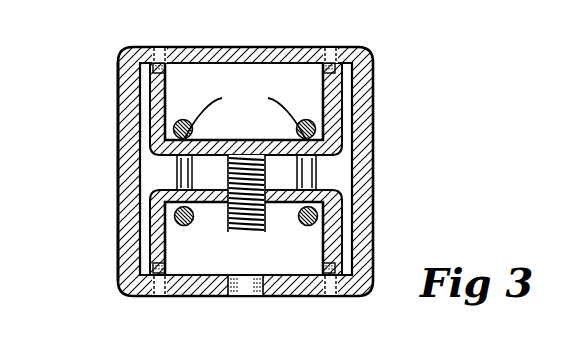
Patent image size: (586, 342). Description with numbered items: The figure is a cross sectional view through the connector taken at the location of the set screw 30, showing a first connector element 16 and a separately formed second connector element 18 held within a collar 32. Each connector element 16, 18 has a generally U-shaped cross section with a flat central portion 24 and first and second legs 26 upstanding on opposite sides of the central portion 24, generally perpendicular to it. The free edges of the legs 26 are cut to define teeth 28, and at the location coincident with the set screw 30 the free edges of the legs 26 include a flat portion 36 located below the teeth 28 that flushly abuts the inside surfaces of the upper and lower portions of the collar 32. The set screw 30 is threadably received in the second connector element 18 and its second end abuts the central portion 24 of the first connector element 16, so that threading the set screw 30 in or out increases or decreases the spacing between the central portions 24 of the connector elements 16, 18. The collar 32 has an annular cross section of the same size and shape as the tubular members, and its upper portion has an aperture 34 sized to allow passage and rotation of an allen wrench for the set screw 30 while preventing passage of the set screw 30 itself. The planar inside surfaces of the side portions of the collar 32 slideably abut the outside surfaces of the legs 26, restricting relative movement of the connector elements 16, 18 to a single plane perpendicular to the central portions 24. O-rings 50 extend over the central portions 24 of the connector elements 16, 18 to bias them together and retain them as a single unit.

The first connector element 16 is at (142, 78).
The second connector element 18 is at (142, 255).
The central portion 24 is at (317, 186).
The legs 26 is at (132, 100).
The teeth 28 is at (160, 52).
The set screw 30 is at (252, 233).
The collar 32 is at (118, 131).
The aperture 34 is at (253, 297).
The portion 36 is at (168, 72).
The O-rings 50 is at (245, 111).